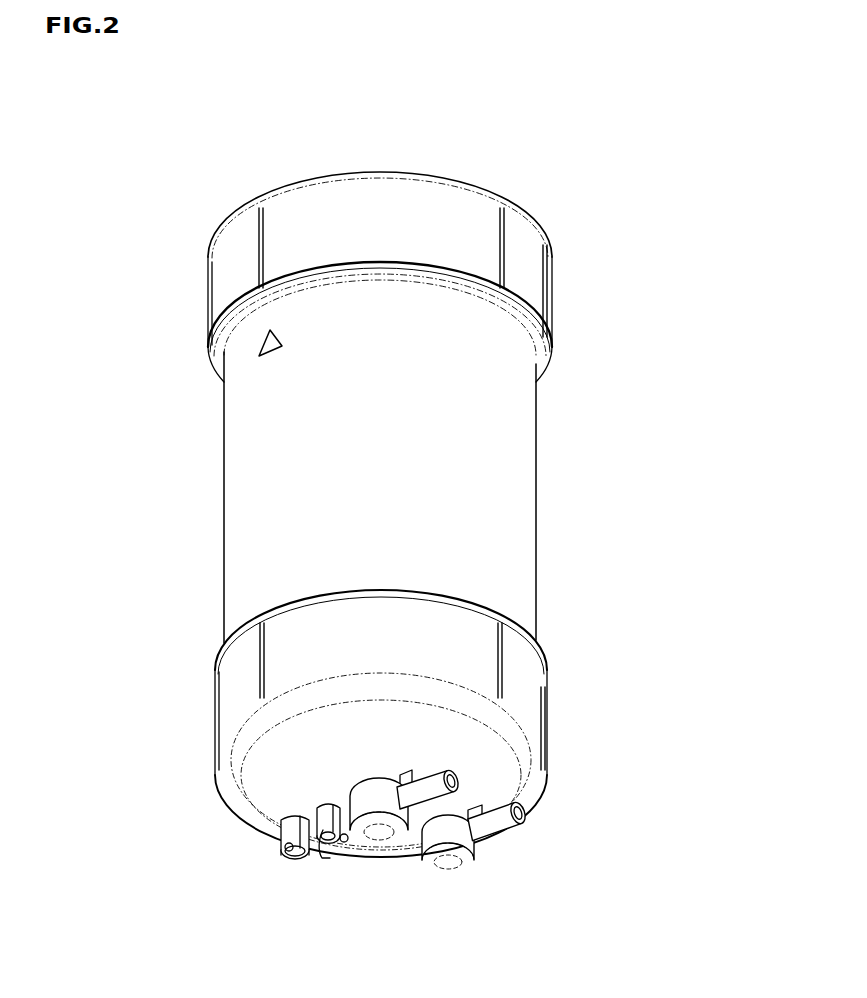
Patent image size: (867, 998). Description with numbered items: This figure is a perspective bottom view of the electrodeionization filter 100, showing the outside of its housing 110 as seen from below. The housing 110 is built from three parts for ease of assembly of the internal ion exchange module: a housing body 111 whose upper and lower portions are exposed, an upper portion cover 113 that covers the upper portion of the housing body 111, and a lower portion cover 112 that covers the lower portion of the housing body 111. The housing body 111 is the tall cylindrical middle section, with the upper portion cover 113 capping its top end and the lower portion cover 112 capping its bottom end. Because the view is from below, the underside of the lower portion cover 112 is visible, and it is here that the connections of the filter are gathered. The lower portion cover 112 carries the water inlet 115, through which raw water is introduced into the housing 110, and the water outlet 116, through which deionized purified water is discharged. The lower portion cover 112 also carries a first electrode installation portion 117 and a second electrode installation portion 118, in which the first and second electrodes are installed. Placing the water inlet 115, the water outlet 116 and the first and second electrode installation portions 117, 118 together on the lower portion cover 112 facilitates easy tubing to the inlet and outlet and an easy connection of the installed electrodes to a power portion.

The electrodeionization filter 100 is at (207, 104).
The housing 110 is at (705, 318).
The housing body 111 is at (518, 460).
The lower portion cover 112 is at (527, 683).
The upper portion cover 113 is at (533, 277).
The water inlet 115 is at (500, 830).
The water outlet 116 is at (447, 768).
The first electrode installation portion 117 is at (335, 857).
The second electrode installation portion 118 is at (302, 860).